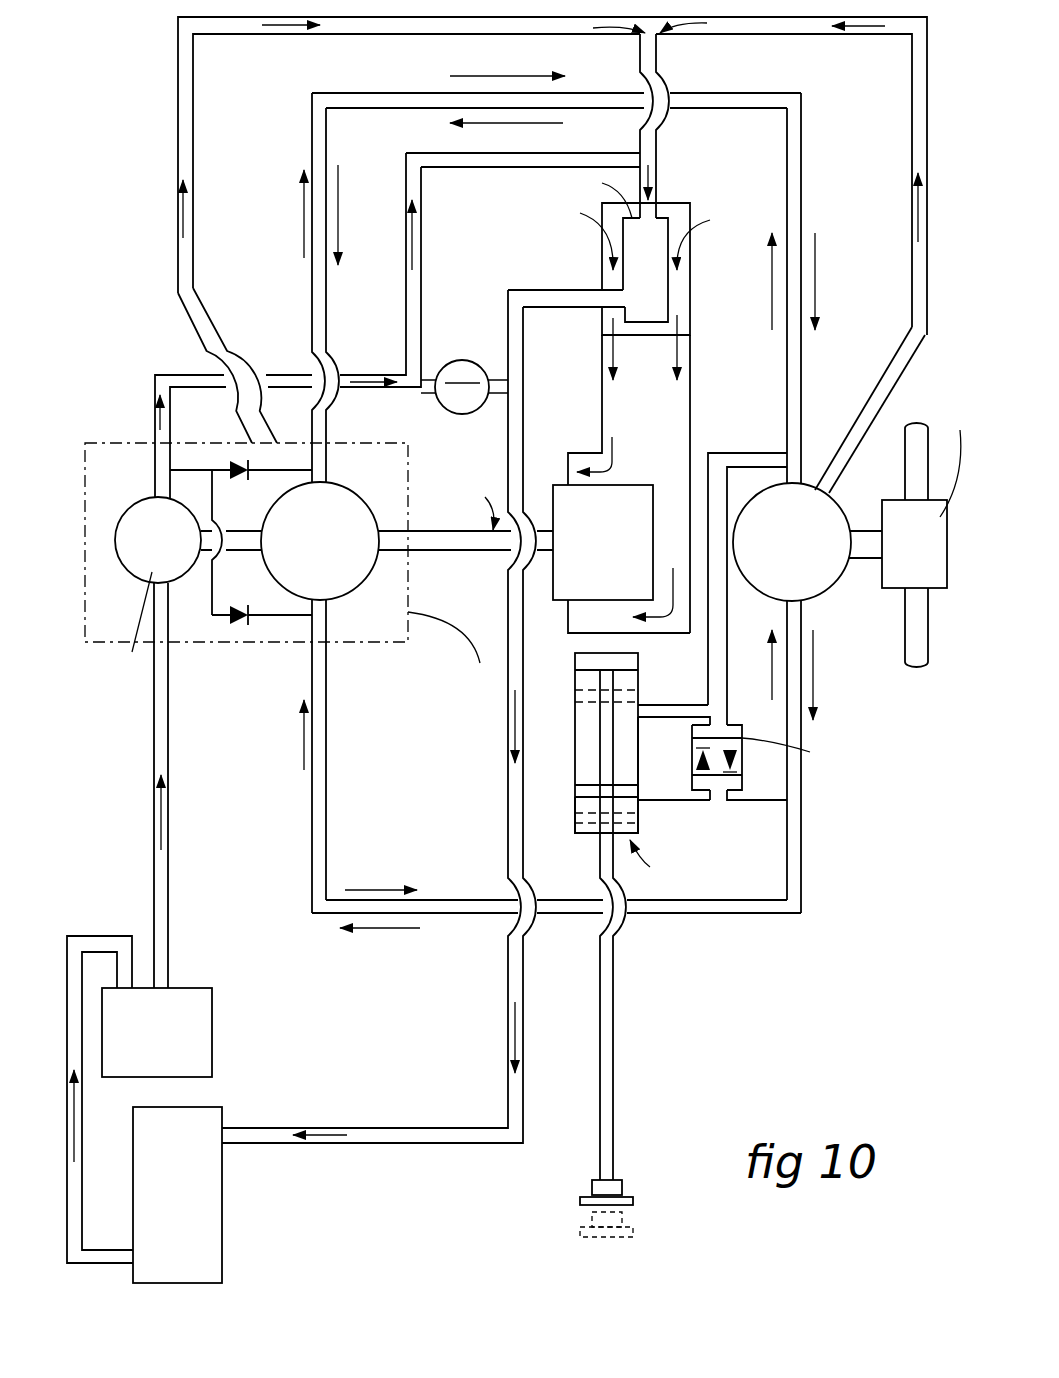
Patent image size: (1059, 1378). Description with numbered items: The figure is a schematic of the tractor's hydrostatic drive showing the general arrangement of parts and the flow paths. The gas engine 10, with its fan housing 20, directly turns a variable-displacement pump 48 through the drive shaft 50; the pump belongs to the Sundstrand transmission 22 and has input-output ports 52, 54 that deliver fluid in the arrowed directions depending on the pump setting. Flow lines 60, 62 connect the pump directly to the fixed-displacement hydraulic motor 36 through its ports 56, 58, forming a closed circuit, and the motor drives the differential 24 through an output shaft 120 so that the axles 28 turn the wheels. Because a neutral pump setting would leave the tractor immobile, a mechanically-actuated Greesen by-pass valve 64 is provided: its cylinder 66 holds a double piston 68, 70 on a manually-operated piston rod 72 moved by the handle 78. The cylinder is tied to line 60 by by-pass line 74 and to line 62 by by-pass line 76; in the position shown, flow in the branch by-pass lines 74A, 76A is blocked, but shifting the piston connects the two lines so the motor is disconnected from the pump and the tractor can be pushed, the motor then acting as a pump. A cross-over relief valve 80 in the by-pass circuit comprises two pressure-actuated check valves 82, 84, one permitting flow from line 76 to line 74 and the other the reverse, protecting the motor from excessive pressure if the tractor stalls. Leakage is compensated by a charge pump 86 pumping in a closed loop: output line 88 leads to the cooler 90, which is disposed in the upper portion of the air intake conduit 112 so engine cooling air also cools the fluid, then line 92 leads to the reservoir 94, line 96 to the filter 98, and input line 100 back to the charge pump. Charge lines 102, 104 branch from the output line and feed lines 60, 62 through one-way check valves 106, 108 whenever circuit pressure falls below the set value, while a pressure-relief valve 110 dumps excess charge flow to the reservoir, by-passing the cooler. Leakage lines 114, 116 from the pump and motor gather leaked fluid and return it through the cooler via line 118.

The gas engine 10 is at (625, 482).
The fan housing 20 is at (677, 408).
The hydrostatic transmission 22 is at (110, 438).
The wheel 24 is at (938, 493).
The axles 28 is at (905, 467).
The hydraulic motor 36 is at (825, 578).
The variable-displacement pump 48 is at (345, 587).
The drive shaft 50 is at (475, 557).
The input-output port 52 is at (313, 328).
The input-output port 54 is at (312, 660).
The port 56 is at (798, 473).
The port 58 is at (797, 607).
The flow line 60 is at (342, 97).
The flow line 62 is at (442, 913).
The by-pass valve 64 is at (568, 810).
The cylinder 66 is at (638, 815).
The double piston 68 is at (590, 658).
The double piston 70 is at (575, 787).
The piston rod 72 is at (613, 1060).
The by-pass line 74 is at (750, 455).
The by-pass line 74A is at (670, 708).
The by-pass line 76 is at (730, 810).
The by-pass line 76A is at (663, 800).
The handle 78 is at (622, 1190).
The cross-over relief valve 80 is at (748, 727).
The pressure-actuated check valve 82 is at (697, 758).
The pressure-actuated check valve 84 is at (737, 762).
The charge pump 86 is at (138, 567).
The output line 88 is at (478, 170).
The cooler 90 is at (668, 233).
The line 92 is at (522, 997).
The reservoir 94 is at (215, 1225).
The line 96 is at (80, 1140).
The filter 98 is at (205, 1057).
The input line 100 is at (172, 872).
The charge line 102 is at (185, 472).
The charge line 104 is at (210, 593).
The one-way check valve 106 is at (240, 458).
The one-way check valve 108 is at (235, 632).
The pressure-relief valve 110 is at (468, 360).
The air intake conduit 112 is at (692, 297).
The leakage line 114 is at (178, 165).
The leakage line 116 is at (895, 378).
The line 118 is at (658, 72).
The output shaft 120 is at (862, 533).